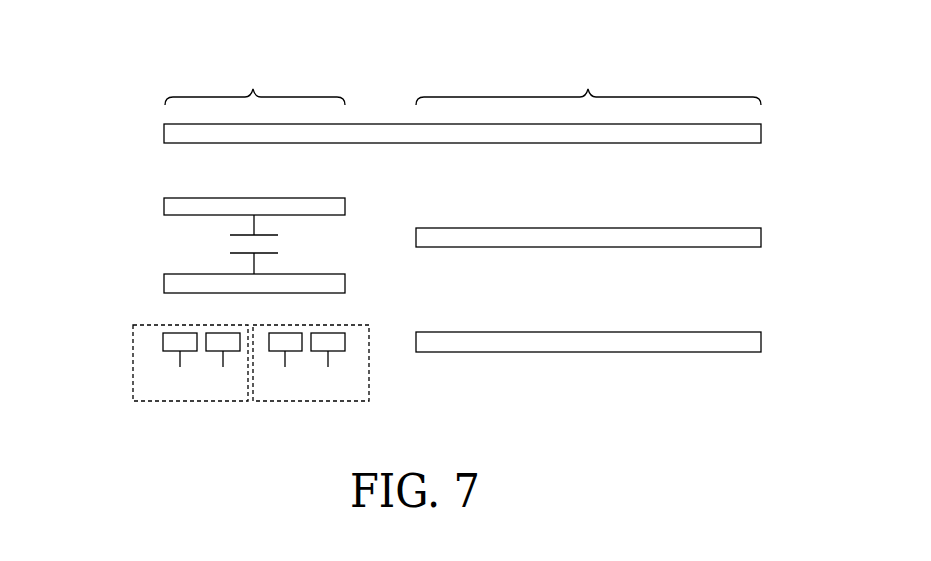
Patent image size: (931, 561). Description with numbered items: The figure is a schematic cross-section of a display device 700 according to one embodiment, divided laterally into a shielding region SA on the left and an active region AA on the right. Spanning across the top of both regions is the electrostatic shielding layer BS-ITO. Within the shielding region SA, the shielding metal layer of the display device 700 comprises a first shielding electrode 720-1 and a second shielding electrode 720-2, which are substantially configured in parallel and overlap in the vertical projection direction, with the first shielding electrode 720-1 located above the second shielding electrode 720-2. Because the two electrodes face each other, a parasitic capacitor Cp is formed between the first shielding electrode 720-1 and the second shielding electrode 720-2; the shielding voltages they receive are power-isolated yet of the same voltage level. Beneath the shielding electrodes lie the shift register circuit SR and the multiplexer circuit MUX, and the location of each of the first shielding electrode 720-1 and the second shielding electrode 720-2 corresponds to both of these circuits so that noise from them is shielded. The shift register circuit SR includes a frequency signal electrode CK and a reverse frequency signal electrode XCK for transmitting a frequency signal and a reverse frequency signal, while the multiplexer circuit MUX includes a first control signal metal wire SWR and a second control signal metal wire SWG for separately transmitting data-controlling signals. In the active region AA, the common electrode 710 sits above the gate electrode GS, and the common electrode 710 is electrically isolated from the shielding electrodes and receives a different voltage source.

The display device 700 is at (819, 498).
The sensing area SA is at (255, 78).
The active area AA is at (588, 78).
The electrostatic shielding layer BS-ITO is at (164, 134).
The first shielding electrode 720-1 is at (164, 208).
The second shielding electrode 720-2 is at (164, 284).
The parasitic capacitor Cp is at (271, 244).
The common electrode 710 is at (761, 243).
The gate electrode GS is at (761, 348).
The shift register circuit SR is at (161, 363).
The frequency signal electrode CK is at (178, 366).
The reverse frequency signal electrode XCK is at (222, 366).
The multiplexer circuit MUX is at (347, 363).
The first control signal metal wire SWR is at (281, 366).
The second control signal metal wire SWG is at (338, 366).